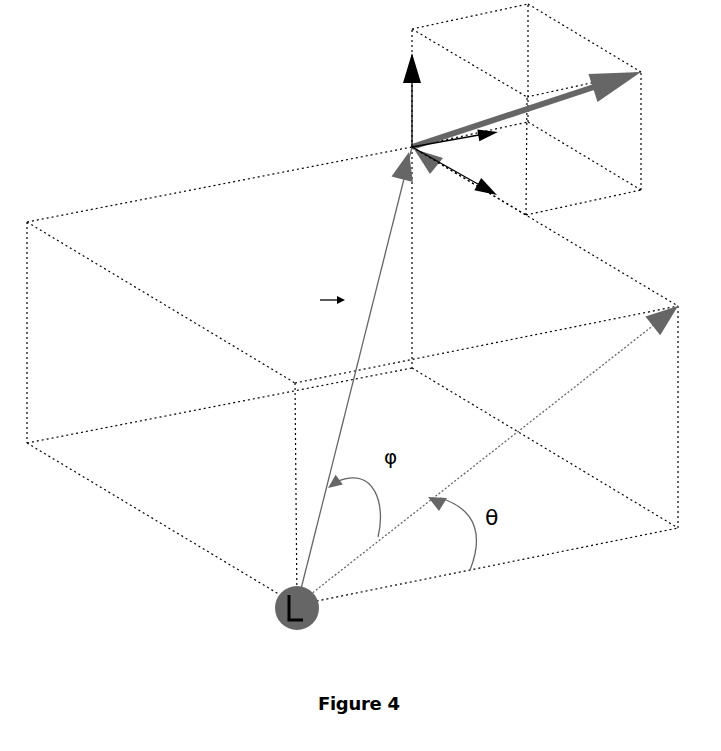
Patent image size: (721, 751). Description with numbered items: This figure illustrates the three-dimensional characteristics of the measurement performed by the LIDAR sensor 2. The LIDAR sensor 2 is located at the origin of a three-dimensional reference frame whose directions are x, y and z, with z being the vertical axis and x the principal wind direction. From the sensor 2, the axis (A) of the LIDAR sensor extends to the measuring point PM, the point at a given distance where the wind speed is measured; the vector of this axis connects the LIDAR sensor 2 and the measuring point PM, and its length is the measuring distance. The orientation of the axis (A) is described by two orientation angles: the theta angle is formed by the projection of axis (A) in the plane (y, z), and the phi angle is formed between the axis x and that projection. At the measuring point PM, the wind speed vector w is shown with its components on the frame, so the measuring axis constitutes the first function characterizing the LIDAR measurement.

The measuring point PM is at (410, 147).
The axis of the LIDAR sensor A is at (397, 203).
The LIDAR sensor 2 is at (280, 595).